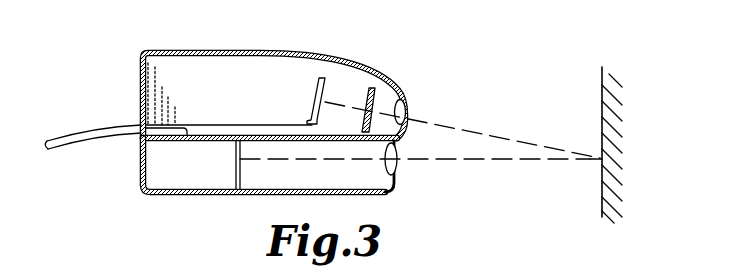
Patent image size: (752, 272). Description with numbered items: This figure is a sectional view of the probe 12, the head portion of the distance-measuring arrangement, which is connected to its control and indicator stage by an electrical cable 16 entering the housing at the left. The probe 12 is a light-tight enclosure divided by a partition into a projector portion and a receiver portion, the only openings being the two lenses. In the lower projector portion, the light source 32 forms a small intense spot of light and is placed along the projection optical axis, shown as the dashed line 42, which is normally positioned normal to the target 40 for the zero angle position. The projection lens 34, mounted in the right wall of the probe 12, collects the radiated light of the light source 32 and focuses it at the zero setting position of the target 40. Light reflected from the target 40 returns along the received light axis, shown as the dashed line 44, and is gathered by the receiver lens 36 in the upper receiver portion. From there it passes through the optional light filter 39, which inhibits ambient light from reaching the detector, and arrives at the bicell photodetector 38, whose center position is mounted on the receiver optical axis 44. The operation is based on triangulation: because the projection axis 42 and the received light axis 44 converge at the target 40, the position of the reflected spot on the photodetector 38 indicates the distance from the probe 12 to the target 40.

The probe 12 is at (312, 33).
The electrical cable 16 is at (107, 125).
The light source 32 is at (143, 167).
The projection lens 34 is at (397, 168).
The receiver lens 36 is at (406, 112).
The photodetector 38 is at (326, 88).
The light filter 39 is at (376, 90).
The target 40 is at (602, 88).
The projection optical axis 42 is at (465, 160).
The received light axis 44 is at (471, 130).